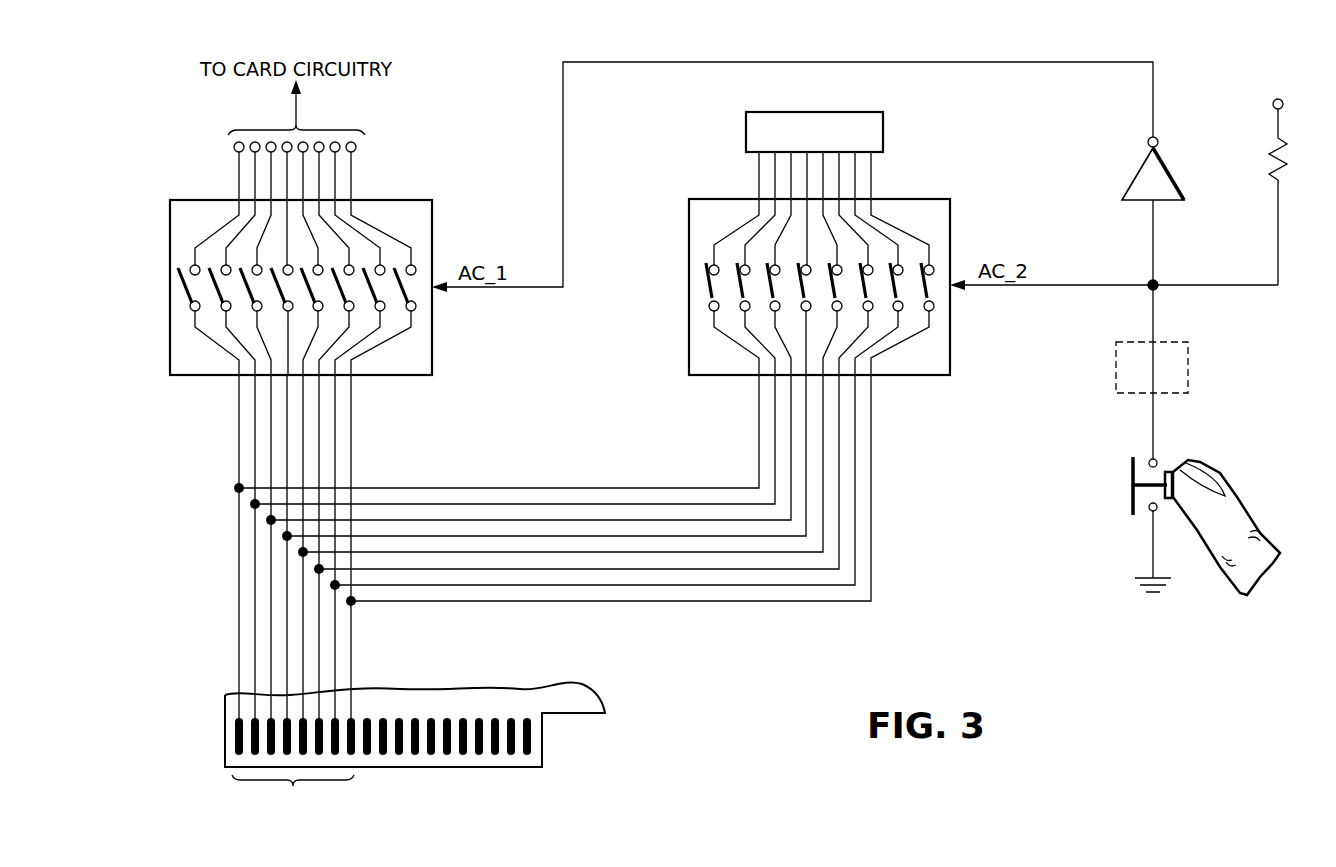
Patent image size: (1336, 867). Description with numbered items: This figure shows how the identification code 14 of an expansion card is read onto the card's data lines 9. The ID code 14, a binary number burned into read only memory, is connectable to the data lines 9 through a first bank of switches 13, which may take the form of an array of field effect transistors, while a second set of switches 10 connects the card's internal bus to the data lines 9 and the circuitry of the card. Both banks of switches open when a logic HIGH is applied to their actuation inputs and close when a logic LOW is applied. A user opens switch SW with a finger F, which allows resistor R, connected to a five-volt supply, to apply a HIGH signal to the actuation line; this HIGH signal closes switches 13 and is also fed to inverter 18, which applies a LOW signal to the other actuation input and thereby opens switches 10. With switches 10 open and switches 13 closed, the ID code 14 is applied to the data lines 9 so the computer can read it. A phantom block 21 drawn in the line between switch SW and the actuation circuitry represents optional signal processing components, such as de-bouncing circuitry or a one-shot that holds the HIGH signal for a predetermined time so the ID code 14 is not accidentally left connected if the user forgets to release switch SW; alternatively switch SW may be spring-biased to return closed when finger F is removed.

The data lines 9 is at (303, 456).
The second set of switches 10 is at (432, 200).
The switches 13 is at (950, 199).
The identification code 14 is at (746, 124).
The inverter 18 is at (1138, 171).
The phantom block 21 is at (1116, 363).
The resistor R is at (1271, 159).
The switch SW is at (1129, 485).
The finger F is at (1207, 472).